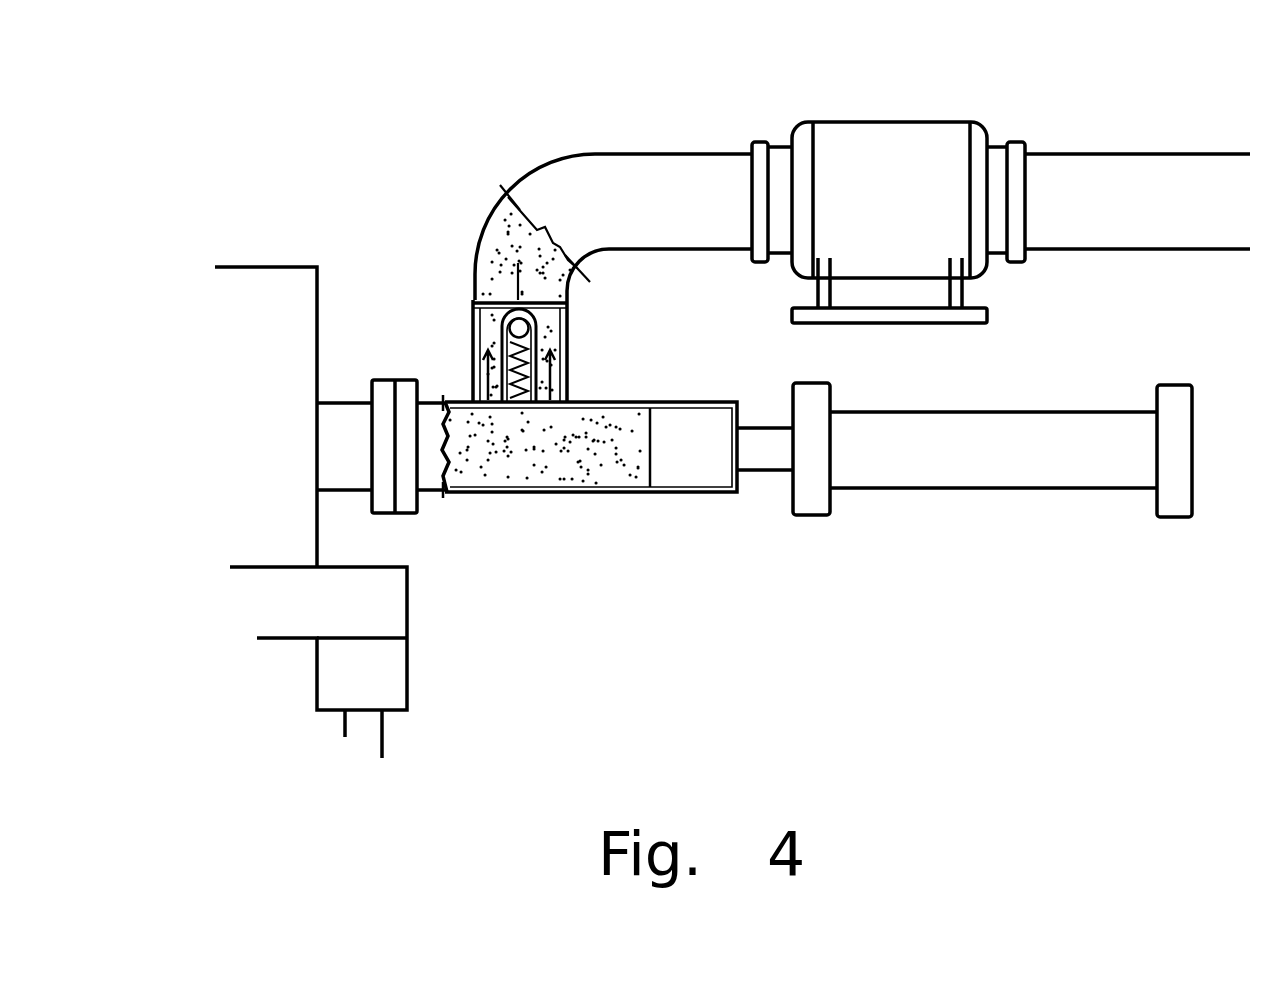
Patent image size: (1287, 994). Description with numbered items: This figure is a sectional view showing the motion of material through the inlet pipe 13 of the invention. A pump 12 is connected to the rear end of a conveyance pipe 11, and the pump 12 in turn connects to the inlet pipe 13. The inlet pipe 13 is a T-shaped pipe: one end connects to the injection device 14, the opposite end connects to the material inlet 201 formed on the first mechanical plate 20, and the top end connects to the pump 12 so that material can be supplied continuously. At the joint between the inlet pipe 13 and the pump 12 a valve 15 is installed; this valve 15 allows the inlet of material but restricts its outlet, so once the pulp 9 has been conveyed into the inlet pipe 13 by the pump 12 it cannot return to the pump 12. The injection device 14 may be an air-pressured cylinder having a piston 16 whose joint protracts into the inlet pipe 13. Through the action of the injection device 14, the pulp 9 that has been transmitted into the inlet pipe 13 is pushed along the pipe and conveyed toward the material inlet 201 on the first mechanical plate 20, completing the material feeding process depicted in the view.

The pulp 9 is at (488, 467).
The conveyance pipe 11 is at (1172, 165).
The pump 12 is at (910, 137).
The inlet pipe 13 is at (567, 493).
The injection device 14 is at (953, 477).
The valve 15 is at (495, 338).
The piston 16 is at (697, 478).
The first mechanical plate 20 is at (238, 293).
The material inlet 201 is at (348, 413).